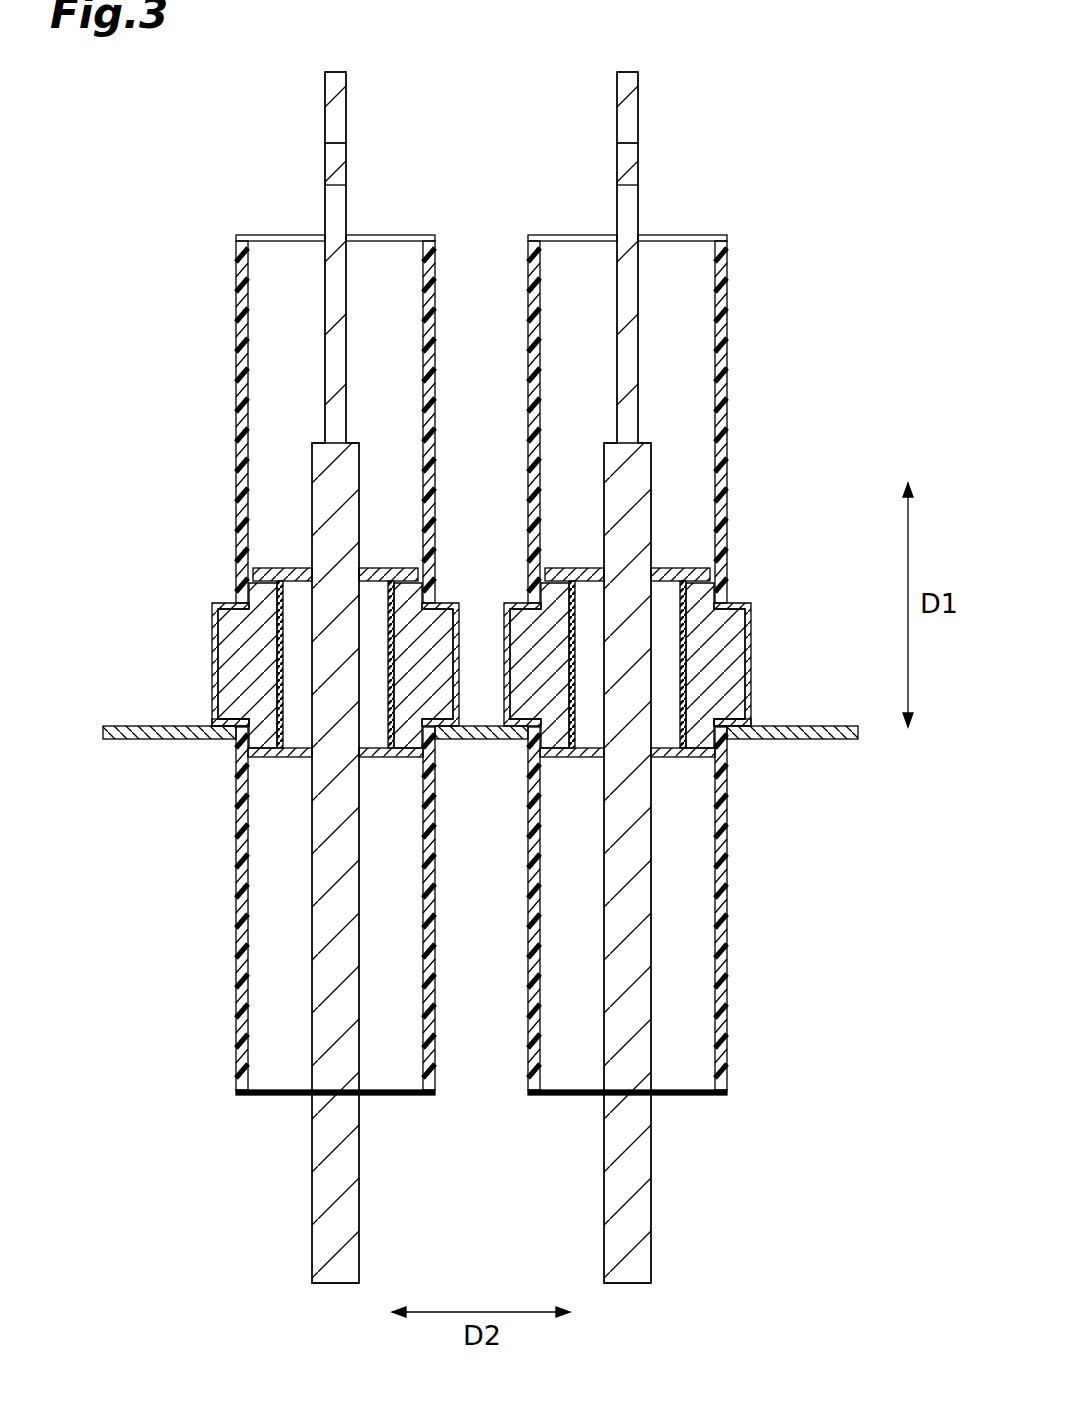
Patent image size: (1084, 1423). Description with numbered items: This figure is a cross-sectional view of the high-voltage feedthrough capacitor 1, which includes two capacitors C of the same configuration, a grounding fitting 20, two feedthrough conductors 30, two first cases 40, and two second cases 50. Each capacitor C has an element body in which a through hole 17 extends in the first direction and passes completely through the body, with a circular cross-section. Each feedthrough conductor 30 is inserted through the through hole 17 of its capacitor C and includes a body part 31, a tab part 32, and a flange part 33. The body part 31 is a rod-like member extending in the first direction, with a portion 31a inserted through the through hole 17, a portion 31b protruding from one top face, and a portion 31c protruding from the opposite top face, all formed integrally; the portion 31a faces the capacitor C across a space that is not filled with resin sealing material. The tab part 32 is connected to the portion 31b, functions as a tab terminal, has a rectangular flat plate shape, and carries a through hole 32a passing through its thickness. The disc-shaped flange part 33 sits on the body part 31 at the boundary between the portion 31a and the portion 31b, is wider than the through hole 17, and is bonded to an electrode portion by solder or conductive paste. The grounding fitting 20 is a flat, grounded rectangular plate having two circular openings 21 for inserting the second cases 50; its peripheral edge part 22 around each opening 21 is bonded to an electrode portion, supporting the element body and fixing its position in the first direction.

The high-voltage feedthrough capacitor 1 is at (766, 128).
The through hole 17 is at (382, 612).
The grounding fitting 20 is at (130, 726).
The opening 21 is at (250, 722).
The peripheral edge part 22 is at (220, 740).
The feedthrough conductor 30 is at (335, 102).
The body part 31 is at (313, 1008).
The portion inserted through the through hole 31a is at (320, 622).
The portion protruding from the top face 31b is at (325, 475).
The portion protruding from the top face 31c is at (323, 950).
The tab part 32 is at (335, 212).
The through hole 32a is at (336, 178).
The flange part 33 is at (282, 576).
The first case 40 is at (243, 300).
The second case 50 is at (242, 1070).
The capacitor C is at (212, 606).